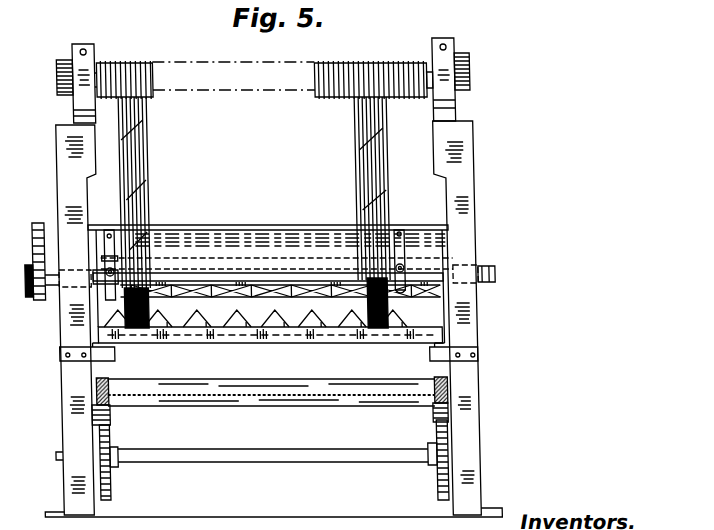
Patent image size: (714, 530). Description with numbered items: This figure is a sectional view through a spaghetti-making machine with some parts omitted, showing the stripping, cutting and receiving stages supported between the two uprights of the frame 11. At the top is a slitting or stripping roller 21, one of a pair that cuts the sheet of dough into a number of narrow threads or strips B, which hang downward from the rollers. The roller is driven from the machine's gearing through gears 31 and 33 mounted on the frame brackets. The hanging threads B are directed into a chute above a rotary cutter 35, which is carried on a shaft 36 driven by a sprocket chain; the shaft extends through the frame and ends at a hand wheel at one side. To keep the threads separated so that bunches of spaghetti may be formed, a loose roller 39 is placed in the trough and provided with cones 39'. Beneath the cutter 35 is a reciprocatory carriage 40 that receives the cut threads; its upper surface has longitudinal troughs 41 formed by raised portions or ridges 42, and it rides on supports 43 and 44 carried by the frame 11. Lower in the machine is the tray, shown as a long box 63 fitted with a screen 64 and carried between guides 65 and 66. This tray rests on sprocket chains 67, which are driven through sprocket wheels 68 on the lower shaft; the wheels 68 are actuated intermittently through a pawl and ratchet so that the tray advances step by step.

The frame 11 is at (59, 141).
The slitting or stripping roller 21 is at (132, 65).
The gear 31 is at (53, 76).
The gear 33 is at (467, 74).
The threads or strips B is at (145, 137).
The shaft 36 is at (44, 266).
The rotary cutter 35 is at (292, 252).
The loose roller 39 is at (407, 274).
The cones 39' is at (143, 275).
The raised portions or ridges 42 is at (255, 309).
The longitudinal troughs 41 is at (175, 318).
The support 43 is at (114, 344).
The reciprocatory carriage 40 is at (323, 336).
The support 44 is at (422, 344).
The long box 63 is at (321, 394).
The screen 64 is at (249, 388).
The guide 65 is at (97, 408).
The guide 66 is at (441, 394).
The sprocket chains 67 is at (101, 401).
The sprocket wheels 68 is at (99, 467).